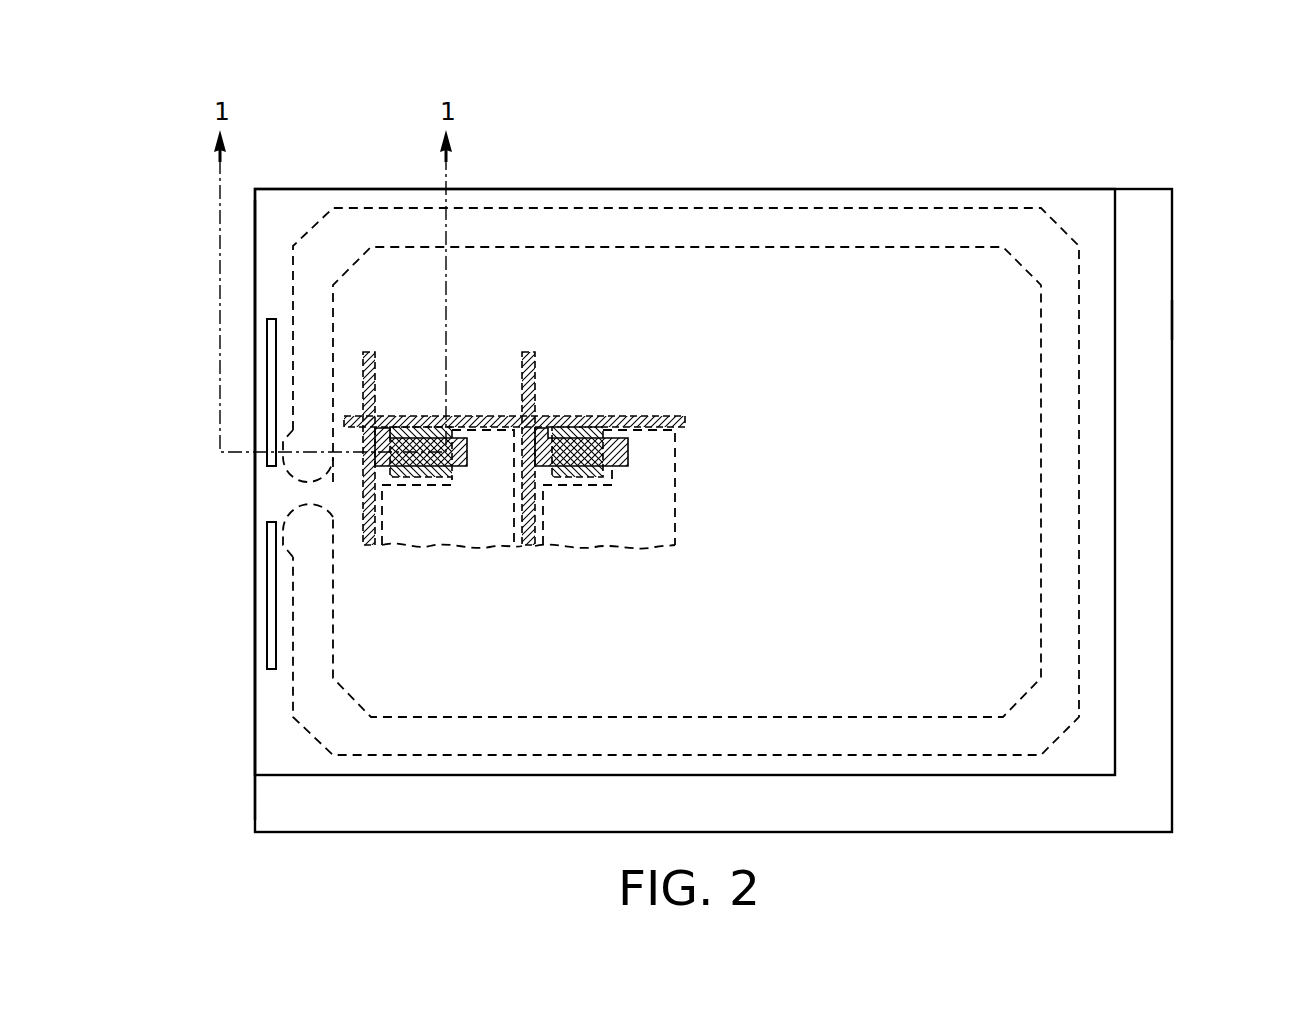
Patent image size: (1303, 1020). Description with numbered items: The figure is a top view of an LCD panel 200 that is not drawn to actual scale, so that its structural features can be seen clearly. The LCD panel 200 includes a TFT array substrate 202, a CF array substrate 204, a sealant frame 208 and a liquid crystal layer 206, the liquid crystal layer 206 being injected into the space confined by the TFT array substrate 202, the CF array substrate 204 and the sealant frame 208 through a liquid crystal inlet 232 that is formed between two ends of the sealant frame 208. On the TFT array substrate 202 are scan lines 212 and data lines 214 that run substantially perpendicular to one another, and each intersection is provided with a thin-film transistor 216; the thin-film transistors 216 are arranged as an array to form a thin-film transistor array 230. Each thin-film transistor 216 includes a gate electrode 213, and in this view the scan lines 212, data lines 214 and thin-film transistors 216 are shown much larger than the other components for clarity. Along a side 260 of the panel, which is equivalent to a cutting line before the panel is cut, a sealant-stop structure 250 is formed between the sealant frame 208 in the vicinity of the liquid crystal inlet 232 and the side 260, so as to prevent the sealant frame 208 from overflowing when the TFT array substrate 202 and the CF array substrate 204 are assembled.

The LCD panel 200 is at (1077, 123).
The TFT array substrate 202 is at (993, 812).
The CF array substrate 204 is at (1103, 331).
The liquid crystal layer 206 is at (923, 298).
The sealant frame 208 is at (840, 228).
The scan lines 212 is at (556, 430).
The gate electrode 213 is at (582, 428).
The data lines 214 is at (366, 352).
The thin-film transistors 216 is at (652, 417).
The thin-film transistor array 230 is at (697, 532).
The liquid crystal inlet 232 is at (290, 497).
The sealant-stop structure 250 is at (267, 384).
The side 260 is at (255, 255).